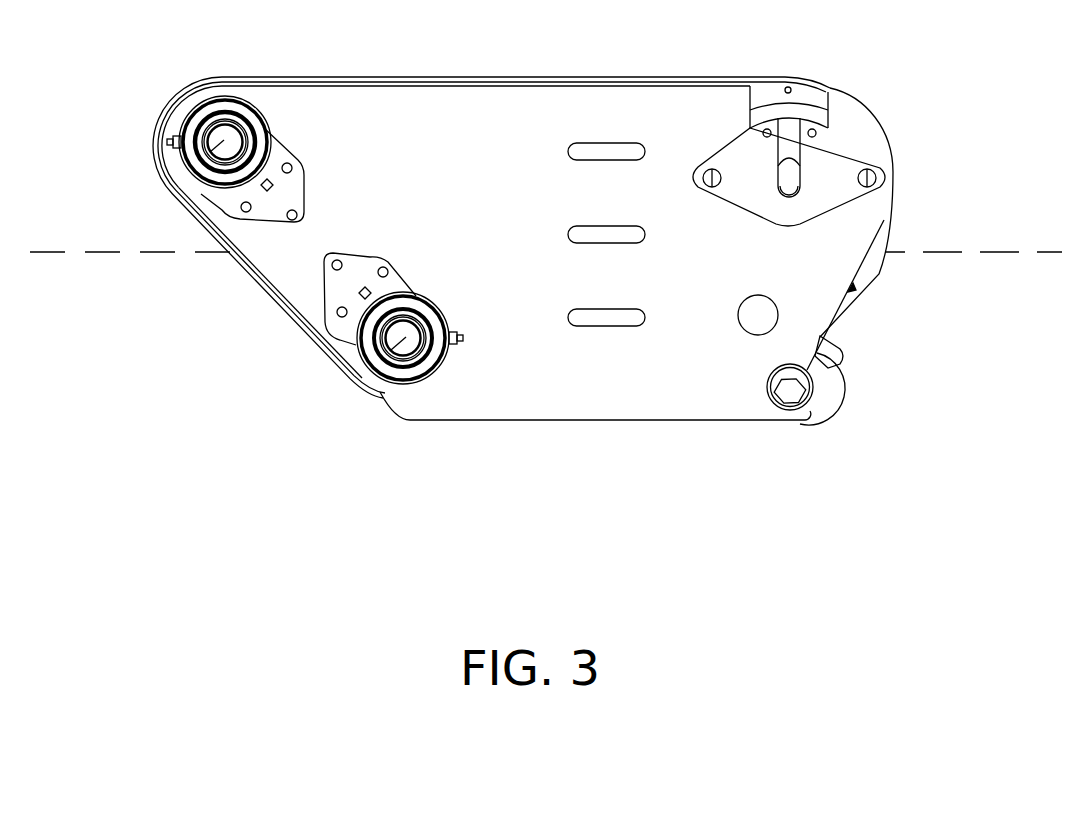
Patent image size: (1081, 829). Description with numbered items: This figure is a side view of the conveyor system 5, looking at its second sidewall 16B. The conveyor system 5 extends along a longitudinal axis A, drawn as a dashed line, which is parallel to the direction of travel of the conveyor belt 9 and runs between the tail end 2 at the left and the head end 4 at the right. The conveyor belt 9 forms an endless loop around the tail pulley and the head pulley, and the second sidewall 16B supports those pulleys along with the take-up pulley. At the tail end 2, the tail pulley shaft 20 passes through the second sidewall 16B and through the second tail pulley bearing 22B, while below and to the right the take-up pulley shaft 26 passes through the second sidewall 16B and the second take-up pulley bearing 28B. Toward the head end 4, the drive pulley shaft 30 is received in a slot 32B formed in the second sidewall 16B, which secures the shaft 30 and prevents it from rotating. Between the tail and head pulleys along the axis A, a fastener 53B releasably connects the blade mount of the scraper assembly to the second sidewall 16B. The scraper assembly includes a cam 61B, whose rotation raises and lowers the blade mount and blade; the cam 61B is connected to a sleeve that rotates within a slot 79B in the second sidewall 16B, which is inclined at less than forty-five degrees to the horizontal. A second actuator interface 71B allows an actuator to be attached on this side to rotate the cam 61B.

The tail end 2 is at (158, 106).
The head end 4 is at (893, 153).
The conveyor system 5 is at (306, 395).
The conveyor belt 9 is at (305, 78).
The second sidewall 16B is at (538, 352).
The shaft 20 is at (210, 152).
The second tail pulley bearing 22B is at (233, 112).
The shaft 26 is at (391, 350).
The second take-up pulley bearing 28B is at (445, 345).
The shaft 30 is at (790, 178).
The slot 32B is at (787, 133).
The fastener 53B is at (762, 316).
The cam 61B is at (828, 388).
The second actuator interface 71B is at (785, 390).
The slot 79B is at (840, 367).
The longitudinal axis A is at (1004, 252).